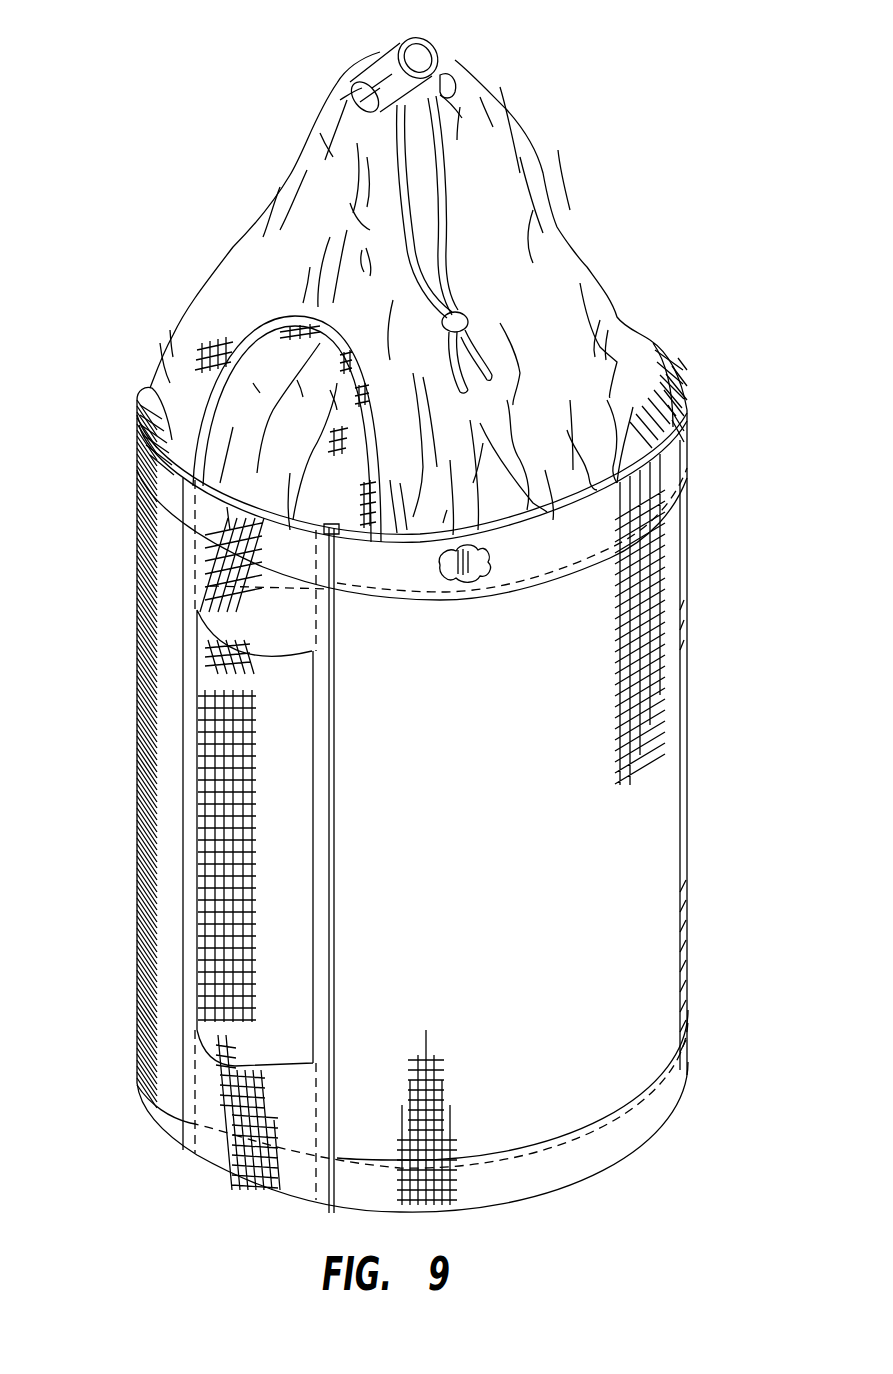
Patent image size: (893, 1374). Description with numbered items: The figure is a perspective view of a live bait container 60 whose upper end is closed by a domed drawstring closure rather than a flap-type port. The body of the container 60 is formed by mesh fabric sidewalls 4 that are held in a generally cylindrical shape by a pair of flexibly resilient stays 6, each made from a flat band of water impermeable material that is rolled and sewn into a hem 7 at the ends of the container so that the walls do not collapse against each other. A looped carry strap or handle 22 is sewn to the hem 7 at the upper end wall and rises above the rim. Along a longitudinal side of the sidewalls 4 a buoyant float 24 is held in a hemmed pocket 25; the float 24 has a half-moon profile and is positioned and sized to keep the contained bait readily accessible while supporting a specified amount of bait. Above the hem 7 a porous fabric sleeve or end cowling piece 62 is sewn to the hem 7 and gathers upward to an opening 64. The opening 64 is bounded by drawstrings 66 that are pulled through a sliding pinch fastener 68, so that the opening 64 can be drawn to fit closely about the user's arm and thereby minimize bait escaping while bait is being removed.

The container 60 is at (180, 220).
The sidewalls 4 is at (690, 637).
The stays 6 is at (470, 570).
The hem 7 is at (398, 586).
The carry strap or handle 22 is at (232, 345).
The buoyant float 24 is at (265, 750).
The hemmed pocket 25 is at (230, 1163).
The porous fabric sleeve 62 is at (565, 232).
The opening 64 is at (456, 78).
The drawstrings 66 is at (432, 230).
The sliding pinch fastener 68 is at (393, 47).